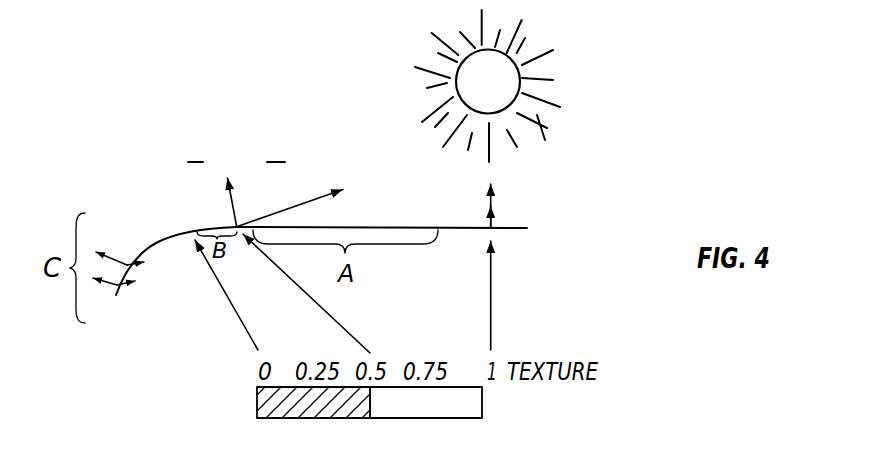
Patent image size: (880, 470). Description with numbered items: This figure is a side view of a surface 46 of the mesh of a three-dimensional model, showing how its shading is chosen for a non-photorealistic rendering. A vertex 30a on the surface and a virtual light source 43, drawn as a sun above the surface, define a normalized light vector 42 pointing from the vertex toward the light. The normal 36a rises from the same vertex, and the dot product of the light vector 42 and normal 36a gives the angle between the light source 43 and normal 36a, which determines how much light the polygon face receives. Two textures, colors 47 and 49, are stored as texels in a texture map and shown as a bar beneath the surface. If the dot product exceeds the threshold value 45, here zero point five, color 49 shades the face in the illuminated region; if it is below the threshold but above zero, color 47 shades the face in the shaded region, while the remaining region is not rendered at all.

The vertex 30a is at (217, 227).
The normal 36a is at (193, 160).
The light vector 42 is at (278, 162).
The virtual light source 43 is at (507, 85).
The threshold value 45 is at (375, 353).
The surface 46 is at (513, 228).
The color 47 is at (288, 418).
The color 49 is at (447, 419).